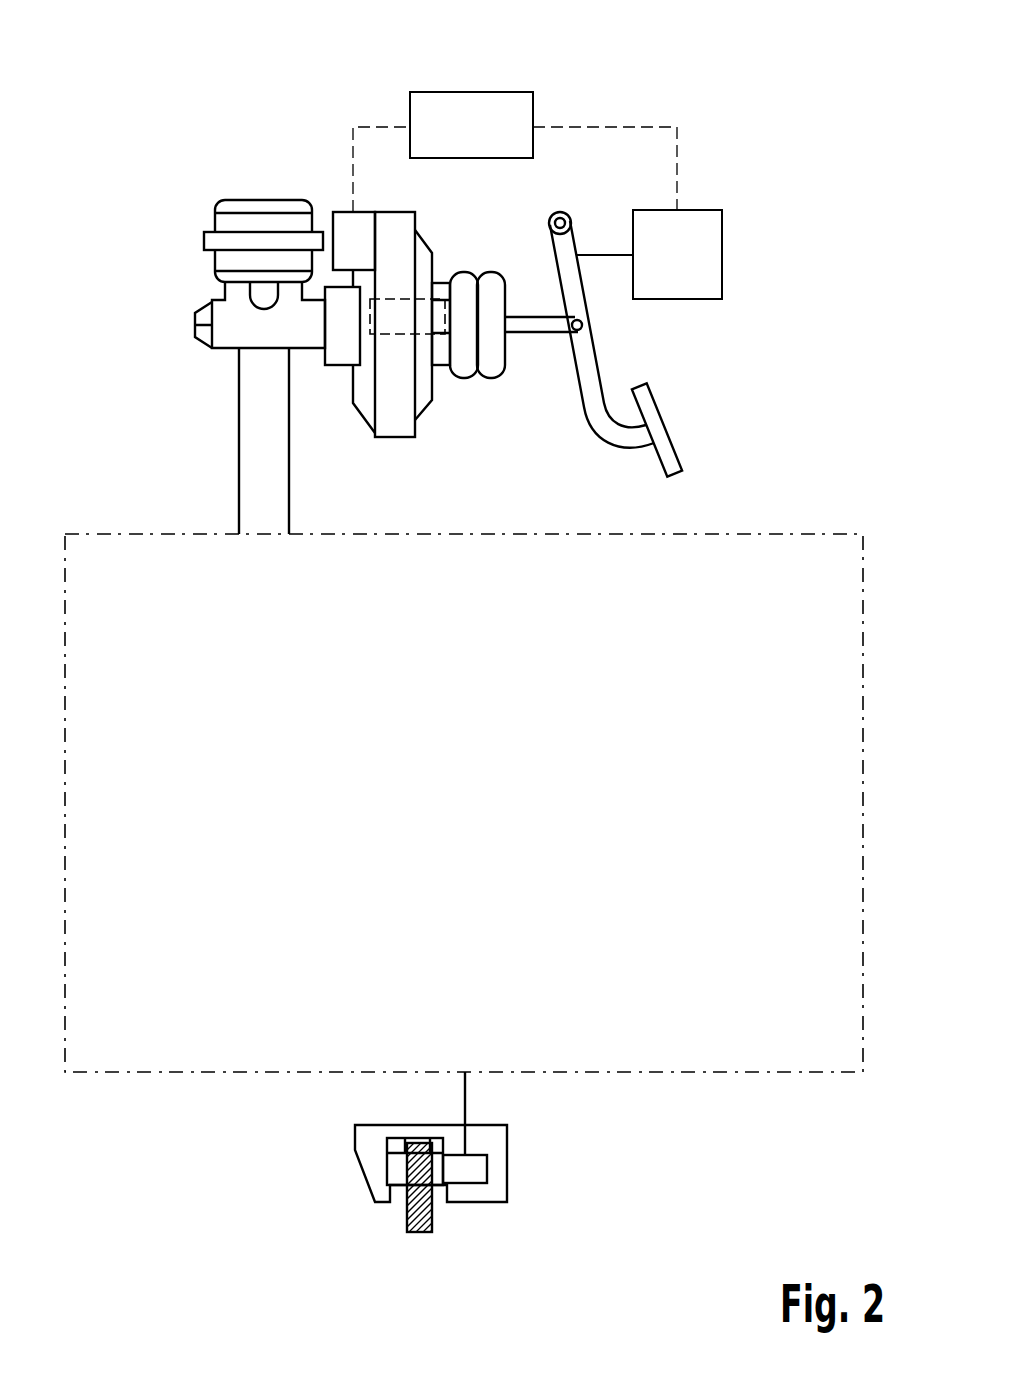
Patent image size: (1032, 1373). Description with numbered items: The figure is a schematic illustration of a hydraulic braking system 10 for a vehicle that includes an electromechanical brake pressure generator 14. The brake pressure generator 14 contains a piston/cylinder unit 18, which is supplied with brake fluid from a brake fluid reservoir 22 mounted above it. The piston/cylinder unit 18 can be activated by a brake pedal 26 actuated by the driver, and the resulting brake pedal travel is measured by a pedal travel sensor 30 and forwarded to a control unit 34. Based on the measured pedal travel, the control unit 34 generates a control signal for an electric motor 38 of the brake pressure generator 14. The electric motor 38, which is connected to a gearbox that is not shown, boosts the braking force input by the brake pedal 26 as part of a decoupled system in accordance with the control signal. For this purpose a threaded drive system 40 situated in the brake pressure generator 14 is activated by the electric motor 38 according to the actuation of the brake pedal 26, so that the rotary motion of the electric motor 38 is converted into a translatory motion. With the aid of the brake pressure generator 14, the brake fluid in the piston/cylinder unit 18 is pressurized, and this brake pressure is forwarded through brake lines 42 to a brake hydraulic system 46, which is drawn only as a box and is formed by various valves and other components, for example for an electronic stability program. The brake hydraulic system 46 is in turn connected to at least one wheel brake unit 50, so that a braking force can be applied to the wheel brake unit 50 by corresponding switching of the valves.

The hydraulic braking system 10 is at (784, 80).
The electromechanical brake pressure generator 14 is at (292, 170).
The piston/cylinder unit 18 is at (228, 323).
The brake fluid reservoir 22 is at (227, 222).
The brake pedal 26 is at (653, 425).
The pedal travel sensor 30 is at (722, 256).
The control unit 34 is at (475, 92).
The electric motor 38 is at (340, 210).
The threaded drive system 40 is at (393, 299).
The brake lines 42 is at (239, 458).
The brake hydraulic system 46 is at (727, 1075).
The wheel brake unit 50 is at (507, 1171).